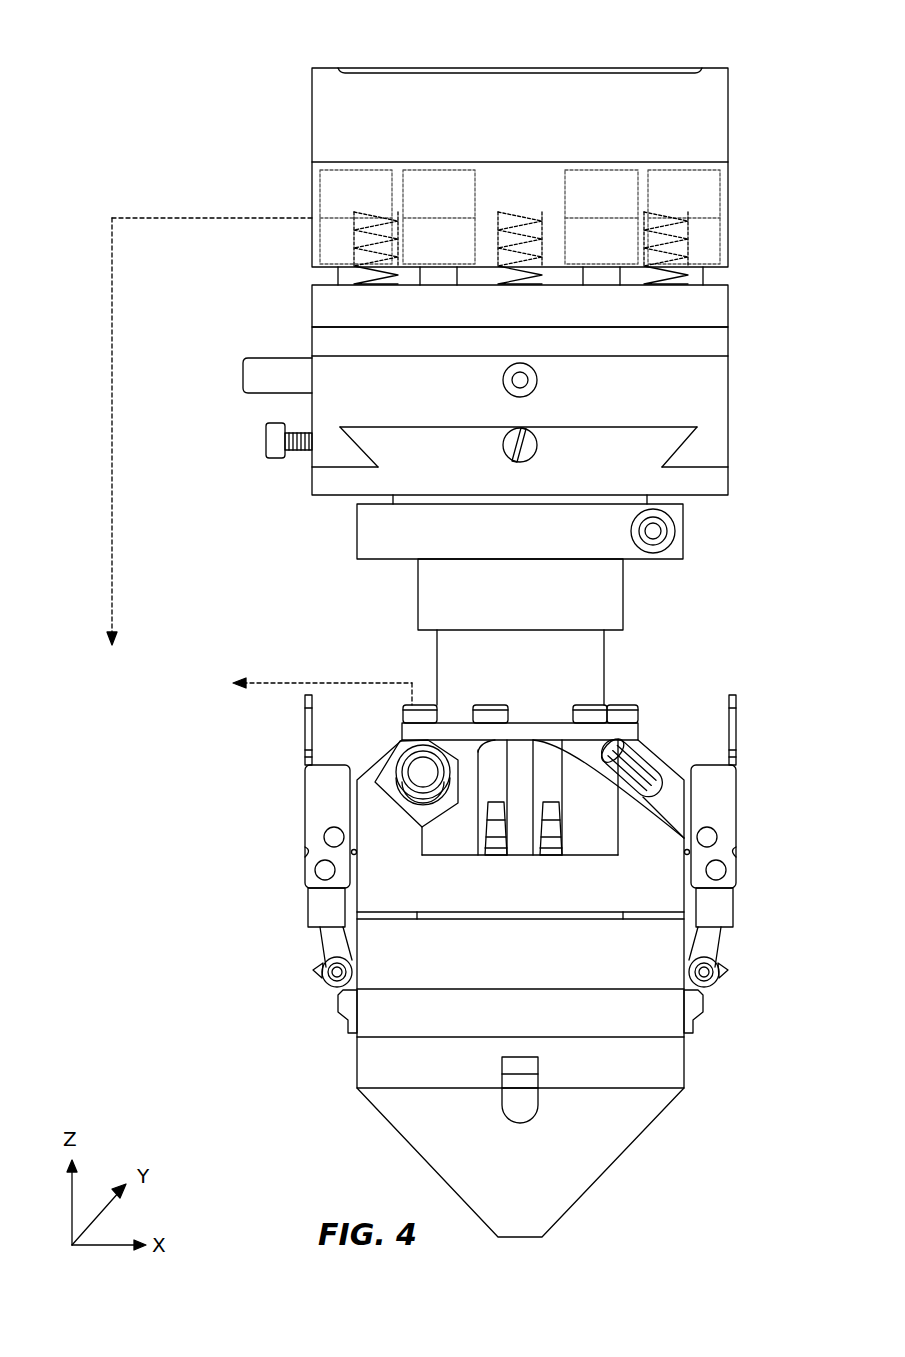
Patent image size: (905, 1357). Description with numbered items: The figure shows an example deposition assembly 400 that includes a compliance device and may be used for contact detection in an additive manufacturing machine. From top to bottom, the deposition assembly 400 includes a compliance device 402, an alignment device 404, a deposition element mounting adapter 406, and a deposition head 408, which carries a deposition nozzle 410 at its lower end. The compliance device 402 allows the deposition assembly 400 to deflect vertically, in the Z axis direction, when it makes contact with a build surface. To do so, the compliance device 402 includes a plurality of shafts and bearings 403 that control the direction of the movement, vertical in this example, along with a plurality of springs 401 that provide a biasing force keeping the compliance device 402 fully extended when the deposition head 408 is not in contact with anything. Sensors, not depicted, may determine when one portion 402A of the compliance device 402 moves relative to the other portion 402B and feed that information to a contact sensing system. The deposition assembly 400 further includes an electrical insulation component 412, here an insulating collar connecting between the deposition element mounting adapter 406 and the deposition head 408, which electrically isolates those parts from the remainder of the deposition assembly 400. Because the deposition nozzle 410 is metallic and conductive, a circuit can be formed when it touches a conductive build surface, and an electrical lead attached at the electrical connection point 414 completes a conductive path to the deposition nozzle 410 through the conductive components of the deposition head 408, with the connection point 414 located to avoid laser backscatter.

The deposition assembly 400 is at (196, 50).
The springs 401 is at (330, 193).
The compliance device 402 is at (772, 68).
The portion of compliance device 402A is at (328, 108).
The other portion of compliance device 402B is at (312, 303).
The shafts and bearings 403 is at (340, 278).
The alignment device 404 is at (772, 498).
The deposition element mounting adapter 406 is at (772, 501).
The deposition head 408 is at (772, 1240).
The deposition nozzle 410 is at (592, 1172).
The electrical insulation component 412 is at (412, 500).
The electrical connection point 414 is at (425, 705).